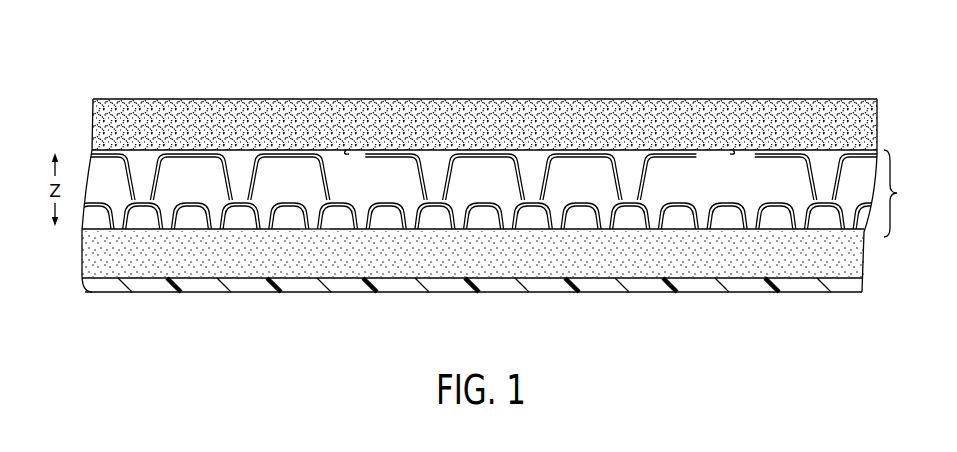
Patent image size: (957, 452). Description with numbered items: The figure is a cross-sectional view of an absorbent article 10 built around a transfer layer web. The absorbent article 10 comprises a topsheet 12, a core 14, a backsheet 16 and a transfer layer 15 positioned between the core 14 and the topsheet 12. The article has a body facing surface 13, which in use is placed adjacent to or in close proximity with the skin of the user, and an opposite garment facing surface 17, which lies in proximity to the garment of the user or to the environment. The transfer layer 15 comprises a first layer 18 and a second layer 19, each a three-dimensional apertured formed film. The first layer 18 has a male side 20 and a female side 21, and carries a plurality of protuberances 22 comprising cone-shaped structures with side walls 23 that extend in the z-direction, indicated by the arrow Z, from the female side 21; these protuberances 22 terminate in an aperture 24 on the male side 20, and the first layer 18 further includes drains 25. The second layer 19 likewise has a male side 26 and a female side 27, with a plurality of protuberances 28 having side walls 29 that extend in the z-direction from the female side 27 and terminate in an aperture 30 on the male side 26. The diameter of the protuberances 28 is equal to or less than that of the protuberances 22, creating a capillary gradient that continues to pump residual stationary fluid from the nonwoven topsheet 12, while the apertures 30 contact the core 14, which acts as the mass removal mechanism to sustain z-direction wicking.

The absorbent article 10 is at (503, 56).
The topsheet 12 is at (287, 112).
The body facing surface 13 is at (347, 93).
The core 14 is at (608, 263).
The transfer layer 15 is at (902, 193).
The backsheet 16 is at (135, 292).
The garment facing surface 17 is at (313, 299).
The first layer 18 is at (178, 142).
The second layer 19 is at (198, 220).
The male side 20 is at (652, 202).
The female side 21 is at (105, 137).
The protuberances 22 is at (553, 173).
The side walls 23 is at (249, 185).
The aperture 24 is at (428, 203).
The drains 25 is at (348, 148).
The male side 26 is at (320, 238).
The female side 27 is at (196, 186).
The protuberances 28 is at (280, 216).
The side walls 29 is at (368, 198).
The aperture 30 is at (460, 210).